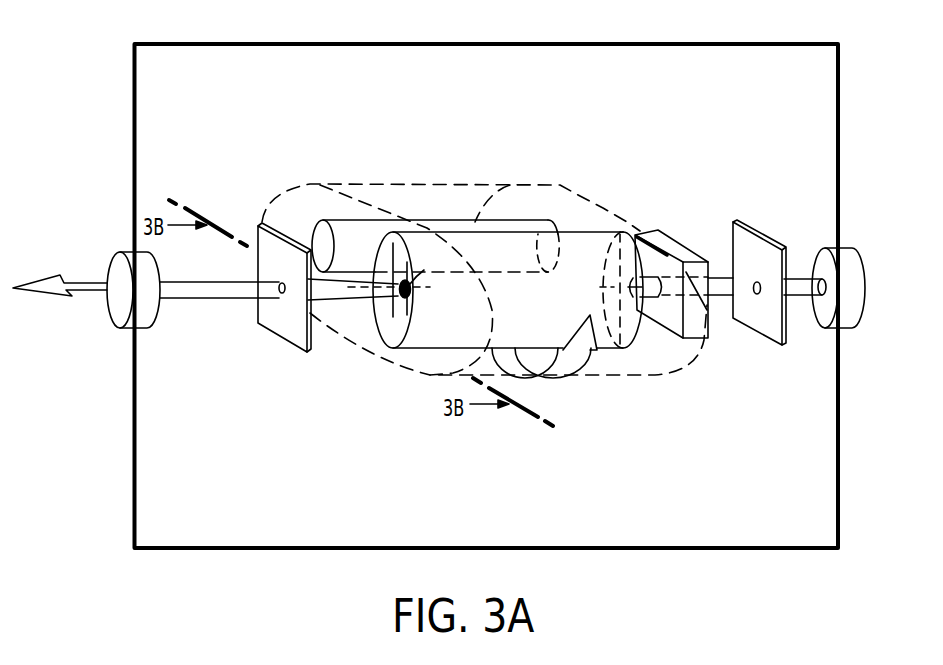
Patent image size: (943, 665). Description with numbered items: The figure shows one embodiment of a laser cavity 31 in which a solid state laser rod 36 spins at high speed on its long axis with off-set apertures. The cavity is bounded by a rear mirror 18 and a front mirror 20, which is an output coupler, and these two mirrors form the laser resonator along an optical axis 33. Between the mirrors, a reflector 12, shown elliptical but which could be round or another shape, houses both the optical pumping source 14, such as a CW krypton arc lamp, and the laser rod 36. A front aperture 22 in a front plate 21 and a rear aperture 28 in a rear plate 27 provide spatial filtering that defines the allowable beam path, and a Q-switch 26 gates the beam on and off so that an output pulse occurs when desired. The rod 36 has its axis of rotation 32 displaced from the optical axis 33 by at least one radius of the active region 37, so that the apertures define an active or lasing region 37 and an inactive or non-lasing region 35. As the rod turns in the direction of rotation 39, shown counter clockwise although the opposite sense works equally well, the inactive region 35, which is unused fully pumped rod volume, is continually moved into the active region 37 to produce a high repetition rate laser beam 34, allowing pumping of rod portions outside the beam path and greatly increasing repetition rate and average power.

The laser cavity 31 is at (463, 42).
The high repetition rate laser beam 34 is at (80, 273).
The front mirror 20 is at (139, 329).
The front aperture 22 is at (261, 323).
The front plate 21 is at (258, 227).
The reflector 12 is at (307, 183).
The optical pumping source 14 is at (437, 220).
The solid state laser rod 36 is at (595, 230).
The inactive region 35 is at (397, 322).
The optical axis 33 is at (413, 291).
The axis of rotation 32 is at (401, 293).
The active region 37 is at (410, 284).
The direction of rotation 39 is at (572, 370).
The Q-switch 26 is at (682, 253).
The rear plate 27 is at (760, 250).
The rear aperture 28 is at (755, 296).
The rear mirror 18 is at (822, 322).